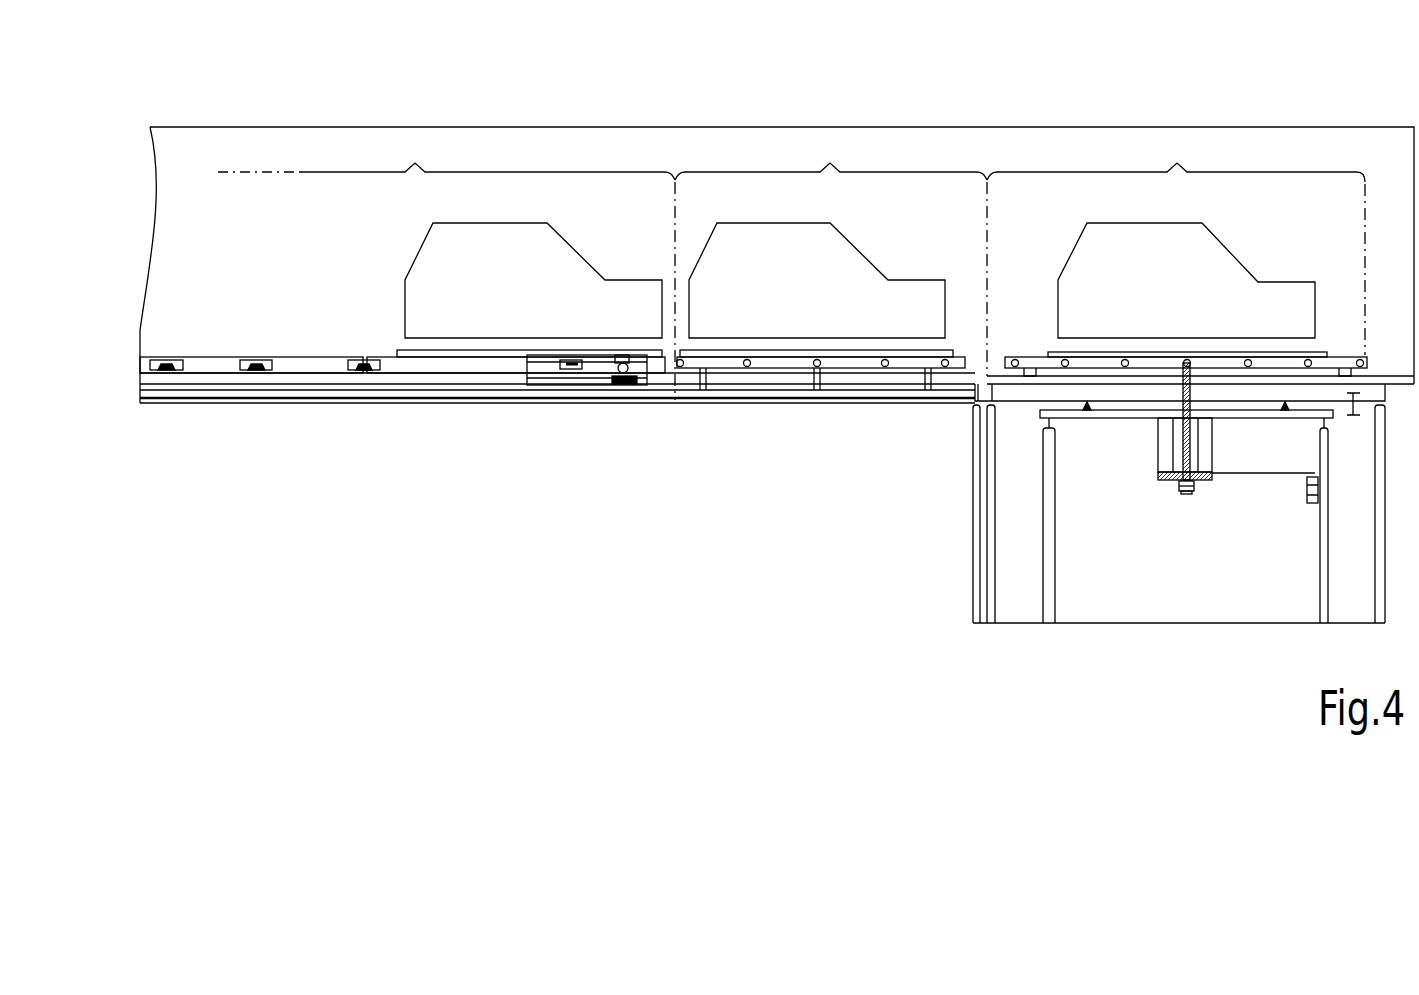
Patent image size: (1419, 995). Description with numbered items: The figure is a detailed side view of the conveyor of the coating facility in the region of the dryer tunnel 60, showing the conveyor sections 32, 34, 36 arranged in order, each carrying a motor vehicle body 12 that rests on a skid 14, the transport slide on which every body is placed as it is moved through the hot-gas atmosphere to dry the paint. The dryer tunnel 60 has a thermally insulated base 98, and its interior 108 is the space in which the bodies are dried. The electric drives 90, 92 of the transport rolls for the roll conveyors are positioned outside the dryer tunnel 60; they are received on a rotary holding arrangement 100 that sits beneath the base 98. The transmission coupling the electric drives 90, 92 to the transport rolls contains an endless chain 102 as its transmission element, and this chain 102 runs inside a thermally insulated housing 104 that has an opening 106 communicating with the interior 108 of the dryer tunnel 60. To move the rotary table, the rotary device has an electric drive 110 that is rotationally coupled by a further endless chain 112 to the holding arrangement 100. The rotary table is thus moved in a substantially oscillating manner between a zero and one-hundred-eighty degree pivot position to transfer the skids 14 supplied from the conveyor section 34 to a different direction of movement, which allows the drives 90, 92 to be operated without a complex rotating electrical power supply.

The dryer tunnel 60 is at (401, 127).
The interior of the dryer tunnel 108 is at (1252, 158).
The conveyor section 32 is at (446, 156).
The conveyor section 34 is at (831, 266).
The conveyor section 36 is at (1176, 254).
The motor vehicle body 12 is at (527, 301).
The skid 14 is at (1323, 355).
The base 98 is at (663, 382).
The opening 106 is at (1197, 410).
The endless chain 102 is at (1165, 405).
The thermally insulated housing 104 is at (1212, 457).
The rotary holding arrangement 100 is at (1165, 479).
The electric drive 90 is at (1187, 494).
The electric drive 92 is at (1186, 492).
The endless chain 112 is at (1262, 477).
The electric drive 110 is at (1312, 505).